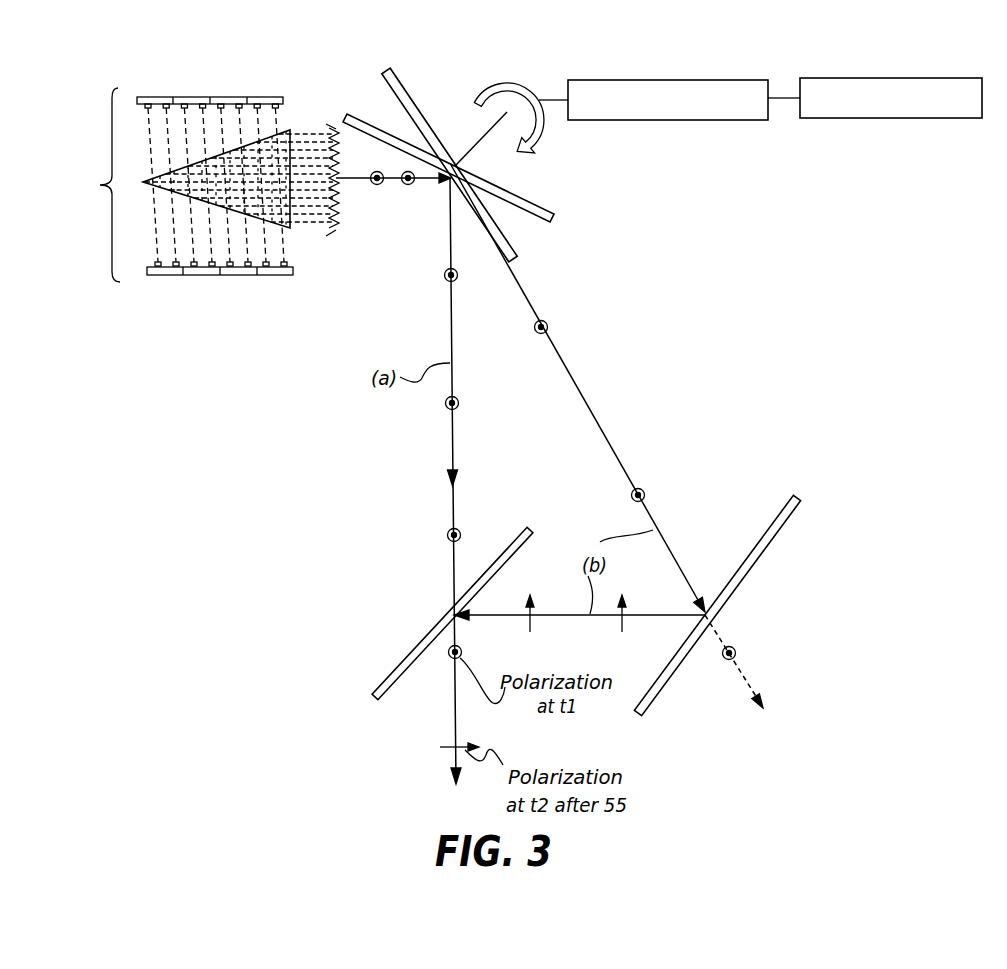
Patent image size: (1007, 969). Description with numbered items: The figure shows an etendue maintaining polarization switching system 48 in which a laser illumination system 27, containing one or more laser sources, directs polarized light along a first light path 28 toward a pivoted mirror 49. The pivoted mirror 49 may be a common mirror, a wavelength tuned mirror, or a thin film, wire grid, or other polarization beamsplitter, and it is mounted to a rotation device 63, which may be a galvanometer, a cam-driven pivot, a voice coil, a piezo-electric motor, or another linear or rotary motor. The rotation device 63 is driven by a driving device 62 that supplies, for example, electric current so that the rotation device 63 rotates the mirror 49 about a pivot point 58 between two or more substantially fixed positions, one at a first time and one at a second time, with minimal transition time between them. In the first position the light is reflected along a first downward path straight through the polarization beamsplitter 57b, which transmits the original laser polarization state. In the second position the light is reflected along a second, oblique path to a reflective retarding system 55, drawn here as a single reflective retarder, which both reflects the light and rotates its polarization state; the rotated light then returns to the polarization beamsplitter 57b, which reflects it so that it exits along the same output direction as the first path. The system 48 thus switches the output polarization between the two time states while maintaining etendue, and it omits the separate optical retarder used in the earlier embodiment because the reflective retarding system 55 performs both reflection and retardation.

The laser illumination system 27 is at (204, 185).
The first light path 28 is at (393, 184).
The pivoted mirror 49 is at (557, 226).
The pivot point 58 is at (463, 161).
The rotation device 63 is at (723, 120).
The driving device 62 is at (953, 118).
The etendue maintaining polarization switching system 48 is at (943, 311).
The polarization beamsplitter 57b is at (390, 665).
The reflective retarding system 55 is at (793, 520).